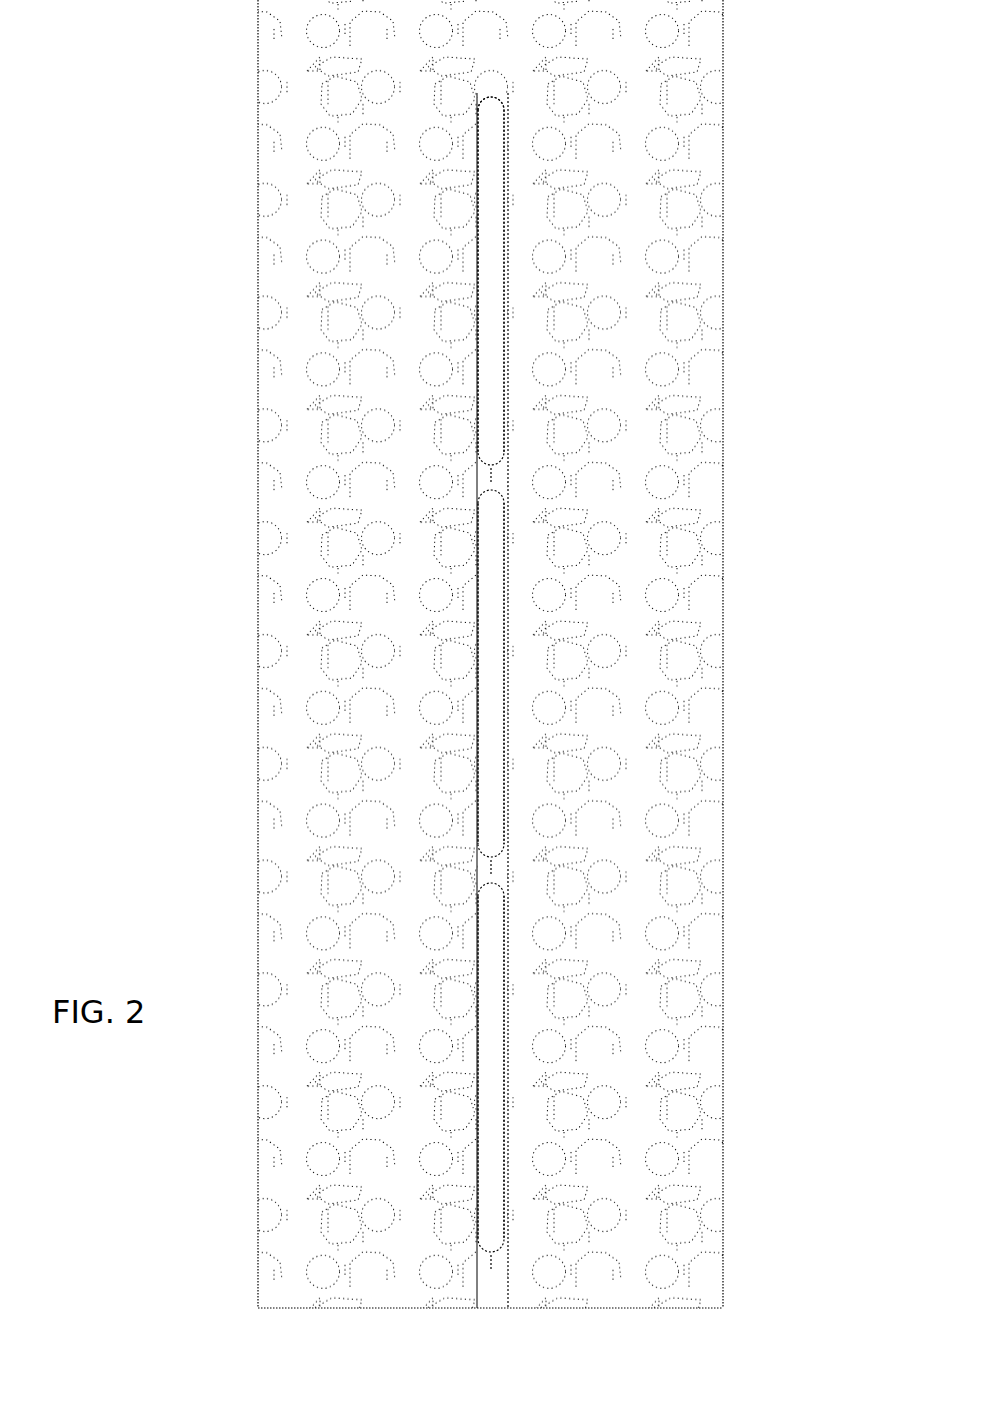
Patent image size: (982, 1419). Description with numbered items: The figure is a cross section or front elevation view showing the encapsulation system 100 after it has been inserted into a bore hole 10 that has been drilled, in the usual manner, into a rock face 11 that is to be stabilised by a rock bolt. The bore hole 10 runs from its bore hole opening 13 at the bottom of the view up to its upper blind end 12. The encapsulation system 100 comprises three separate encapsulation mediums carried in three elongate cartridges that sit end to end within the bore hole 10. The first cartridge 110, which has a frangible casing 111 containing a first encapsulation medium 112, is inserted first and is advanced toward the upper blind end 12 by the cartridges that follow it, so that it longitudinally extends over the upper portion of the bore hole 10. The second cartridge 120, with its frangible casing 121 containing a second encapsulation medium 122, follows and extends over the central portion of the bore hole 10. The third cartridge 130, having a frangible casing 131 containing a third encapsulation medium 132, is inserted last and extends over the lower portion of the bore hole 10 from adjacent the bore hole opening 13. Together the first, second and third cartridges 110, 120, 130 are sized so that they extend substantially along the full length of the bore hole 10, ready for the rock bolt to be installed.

The encapsulation system 100 is at (438, 297).
The bore hole 10 is at (500, 1284).
The rock face 11 is at (371, 1306).
The upper blind end 12 is at (507, 92).
The bore hole opening 13 is at (495, 1290).
The first cartridge 110 is at (512, 325).
The frangible casing 111 is at (508, 189).
The first encapsulation medium 112 is at (500, 415).
The second cartridge 120 is at (511, 693).
The frangible casing 121 is at (510, 574).
The second encapsulation medium 122 is at (498, 793).
The third cartridge 130 is at (512, 1062).
The frangible casing 131 is at (511, 942).
The third encapsulation medium 132 is at (497, 1162).